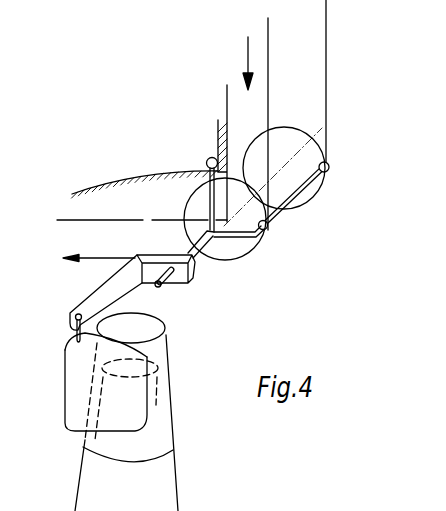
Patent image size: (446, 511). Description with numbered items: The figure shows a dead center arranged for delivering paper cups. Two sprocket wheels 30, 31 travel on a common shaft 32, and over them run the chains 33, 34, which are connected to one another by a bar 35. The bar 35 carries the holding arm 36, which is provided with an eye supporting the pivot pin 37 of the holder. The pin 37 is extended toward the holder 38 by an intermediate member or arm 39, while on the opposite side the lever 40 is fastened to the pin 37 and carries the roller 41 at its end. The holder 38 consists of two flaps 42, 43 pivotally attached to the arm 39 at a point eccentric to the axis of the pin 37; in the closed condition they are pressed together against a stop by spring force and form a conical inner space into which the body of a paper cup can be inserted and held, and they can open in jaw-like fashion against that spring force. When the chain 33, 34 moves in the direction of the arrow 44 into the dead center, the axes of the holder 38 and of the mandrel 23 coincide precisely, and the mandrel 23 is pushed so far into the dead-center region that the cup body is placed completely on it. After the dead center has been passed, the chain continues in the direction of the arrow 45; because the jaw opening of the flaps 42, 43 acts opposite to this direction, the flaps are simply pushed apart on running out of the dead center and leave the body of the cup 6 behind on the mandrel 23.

The cup 6 is at (158, 434).
The mandrel 23 is at (162, 484).
The sprocket wheel 30 is at (250, 246).
The sprocket wheel 31 is at (313, 188).
The common shaft 32 is at (307, 149).
The chain 33 is at (269, 52).
The chain 34 is at (328, 50).
The bar 35 is at (272, 224).
The holding arm 36 is at (221, 261).
The pivot pin 37 is at (170, 284).
The holder 38 is at (63, 352).
The intermediate member or arm 39 is at (100, 287).
The lever 40 is at (207, 202).
The roller 41 is at (210, 158).
The flap 42 is at (66, 397).
The flap 43 is at (82, 315).
The arrow 44 is at (248, 45).
The arrow 45 is at (118, 257).